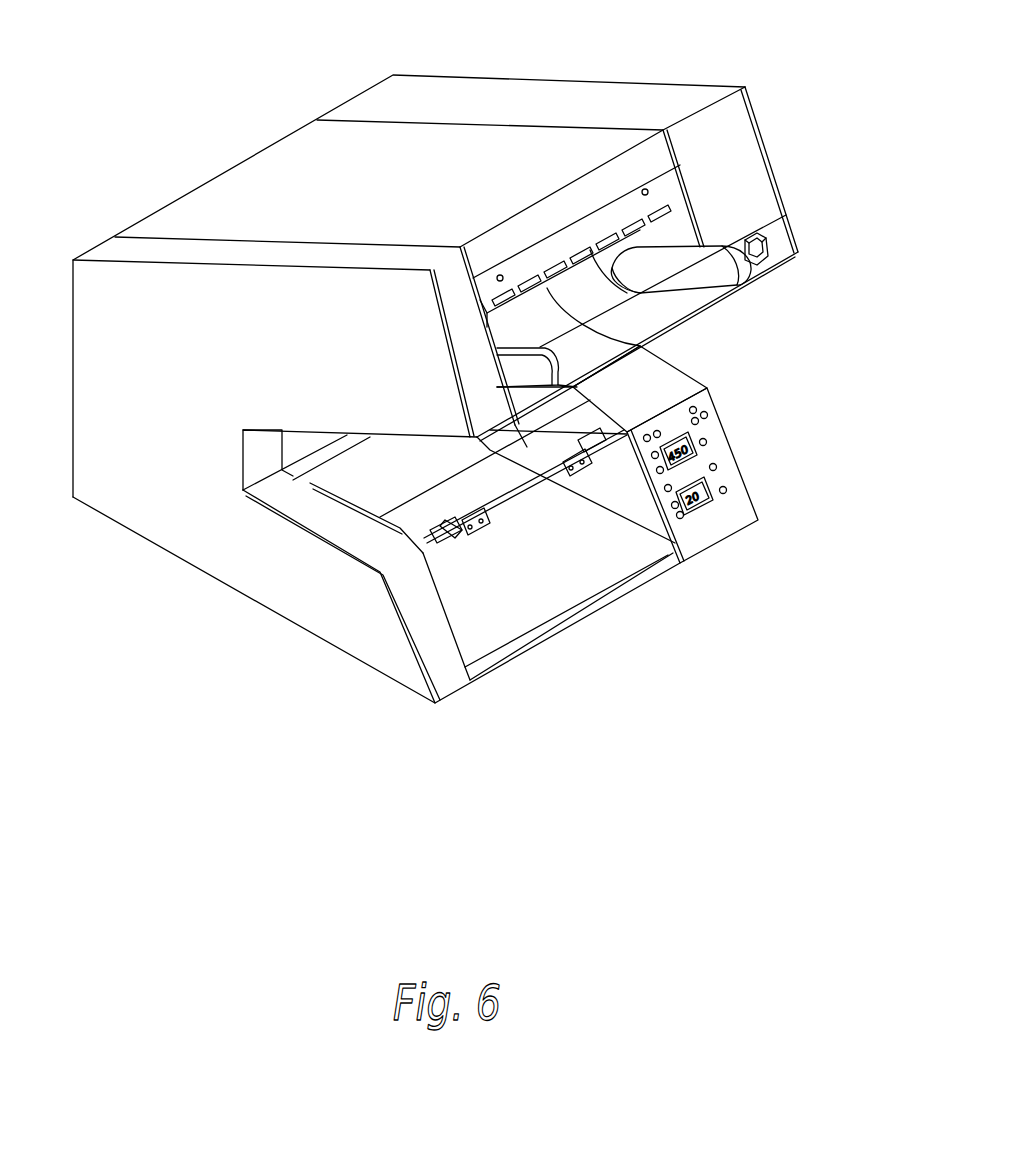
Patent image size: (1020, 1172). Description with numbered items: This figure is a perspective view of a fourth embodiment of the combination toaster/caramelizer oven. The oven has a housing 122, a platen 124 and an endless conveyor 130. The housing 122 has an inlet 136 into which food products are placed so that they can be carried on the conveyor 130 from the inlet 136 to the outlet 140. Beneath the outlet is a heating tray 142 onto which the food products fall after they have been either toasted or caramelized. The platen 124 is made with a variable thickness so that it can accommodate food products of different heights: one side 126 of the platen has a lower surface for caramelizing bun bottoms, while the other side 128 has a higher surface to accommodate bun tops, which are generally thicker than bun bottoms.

The housing 122 is at (590, 108).
The platen 124 is at (668, 218).
The side 126 is at (700, 290).
The side 128 is at (550, 343).
The endless conveyor 130 is at (770, 247).
The inlet 136 is at (687, 237).
The outlet 140 is at (308, 453).
The heating tray 142 is at (500, 600).